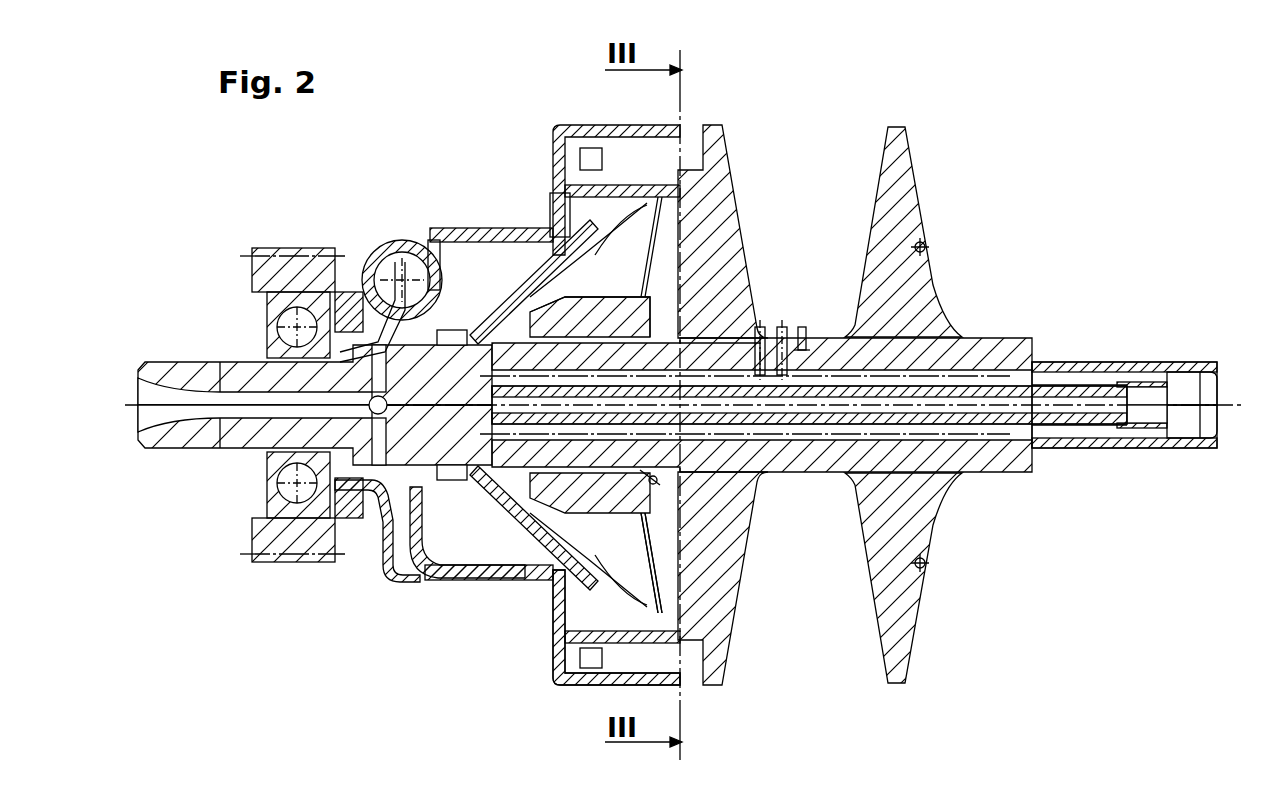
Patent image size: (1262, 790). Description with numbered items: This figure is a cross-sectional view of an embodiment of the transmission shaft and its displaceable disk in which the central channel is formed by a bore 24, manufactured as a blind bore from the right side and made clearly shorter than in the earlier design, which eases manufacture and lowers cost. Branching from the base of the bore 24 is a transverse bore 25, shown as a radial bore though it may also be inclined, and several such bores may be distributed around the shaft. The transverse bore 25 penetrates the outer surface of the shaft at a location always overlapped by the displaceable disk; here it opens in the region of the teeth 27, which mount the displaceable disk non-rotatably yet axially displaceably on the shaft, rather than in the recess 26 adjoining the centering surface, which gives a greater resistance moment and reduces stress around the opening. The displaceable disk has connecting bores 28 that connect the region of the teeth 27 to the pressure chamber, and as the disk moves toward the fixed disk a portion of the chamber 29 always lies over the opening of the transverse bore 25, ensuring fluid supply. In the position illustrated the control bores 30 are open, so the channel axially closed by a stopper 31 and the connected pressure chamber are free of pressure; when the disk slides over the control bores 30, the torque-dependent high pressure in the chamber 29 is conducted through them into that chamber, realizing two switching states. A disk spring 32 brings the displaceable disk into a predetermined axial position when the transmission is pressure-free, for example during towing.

The bore 24 is at (1004, 424).
The transverse bore 25 is at (688, 322).
The recess 26 is at (658, 480).
The teeth 27 is at (646, 513).
The connecting bores 28 is at (558, 240).
The chamber 29 is at (705, 325).
The control bores 30 is at (802, 327).
The stopper 31 is at (1088, 372).
The disk spring 32 is at (628, 588).